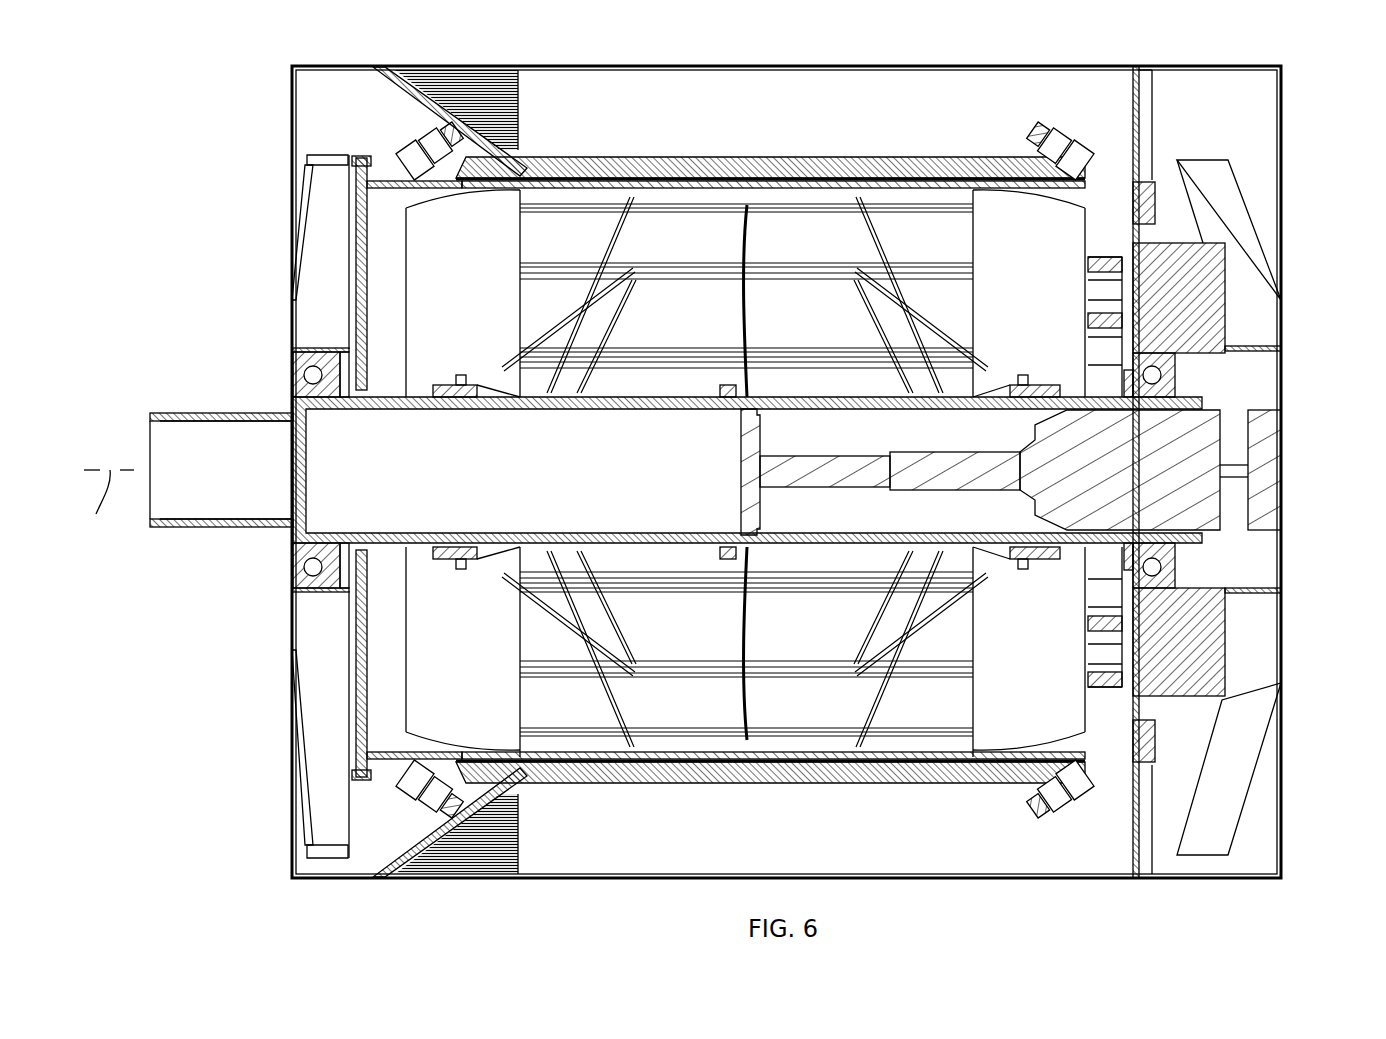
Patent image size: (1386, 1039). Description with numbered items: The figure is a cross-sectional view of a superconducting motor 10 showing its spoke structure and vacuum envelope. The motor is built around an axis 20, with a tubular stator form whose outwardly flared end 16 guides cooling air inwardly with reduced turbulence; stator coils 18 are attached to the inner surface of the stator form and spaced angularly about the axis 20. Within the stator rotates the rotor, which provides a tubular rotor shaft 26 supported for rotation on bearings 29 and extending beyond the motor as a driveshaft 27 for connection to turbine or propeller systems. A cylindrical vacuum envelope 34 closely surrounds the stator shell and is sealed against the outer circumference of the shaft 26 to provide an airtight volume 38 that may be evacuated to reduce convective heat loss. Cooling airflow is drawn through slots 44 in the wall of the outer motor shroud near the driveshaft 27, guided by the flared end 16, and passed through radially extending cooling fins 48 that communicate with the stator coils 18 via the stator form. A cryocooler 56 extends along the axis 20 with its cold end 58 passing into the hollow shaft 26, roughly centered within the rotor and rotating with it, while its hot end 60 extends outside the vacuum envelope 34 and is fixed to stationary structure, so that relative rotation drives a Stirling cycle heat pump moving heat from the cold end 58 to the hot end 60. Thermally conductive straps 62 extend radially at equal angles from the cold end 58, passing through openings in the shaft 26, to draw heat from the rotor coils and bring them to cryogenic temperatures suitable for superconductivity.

The superconducting motor 10 is at (1324, 127).
The outwardly flared end 16 is at (396, 107).
The stator coils 18 is at (556, 172).
The axis 20 is at (107, 511).
The tubular rotor shaft 26 is at (298, 471).
The driveshaft 27 is at (170, 524).
The bearings 29 is at (318, 378).
The vacuum envelope 34 is at (393, 183).
The airtight volume 38 is at (1058, 238).
The slots 44 is at (492, 62).
The cooling fins 48 is at (800, 98).
The cryocooler 56 is at (1197, 500).
The cold end 58 is at (740, 471).
The hot end 60 is at (1266, 456).
The thermally conductive straps 62 is at (752, 250).